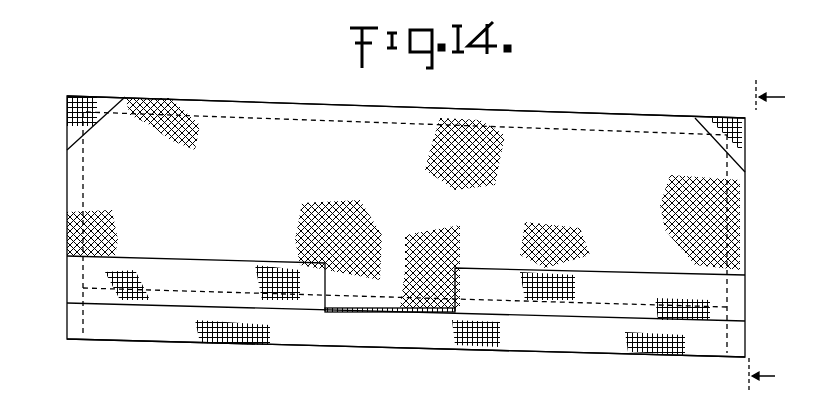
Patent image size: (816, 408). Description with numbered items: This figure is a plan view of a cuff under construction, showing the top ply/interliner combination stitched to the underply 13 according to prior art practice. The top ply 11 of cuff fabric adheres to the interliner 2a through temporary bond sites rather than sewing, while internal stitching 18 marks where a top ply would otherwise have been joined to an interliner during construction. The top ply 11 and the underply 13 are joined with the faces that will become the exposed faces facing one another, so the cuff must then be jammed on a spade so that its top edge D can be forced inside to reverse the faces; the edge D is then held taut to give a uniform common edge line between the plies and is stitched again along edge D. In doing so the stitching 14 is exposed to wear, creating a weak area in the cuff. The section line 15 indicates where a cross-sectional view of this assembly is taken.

The stitching 14 is at (255, 118).
The interliner 2a is at (120, 205).
The top ply 11 is at (88, 269).
The underply 13 is at (148, 326).
The internal stitching 18 is at (593, 304).
The top edge D is at (500, 111).
The section line 15- 15 is at (750, 236).